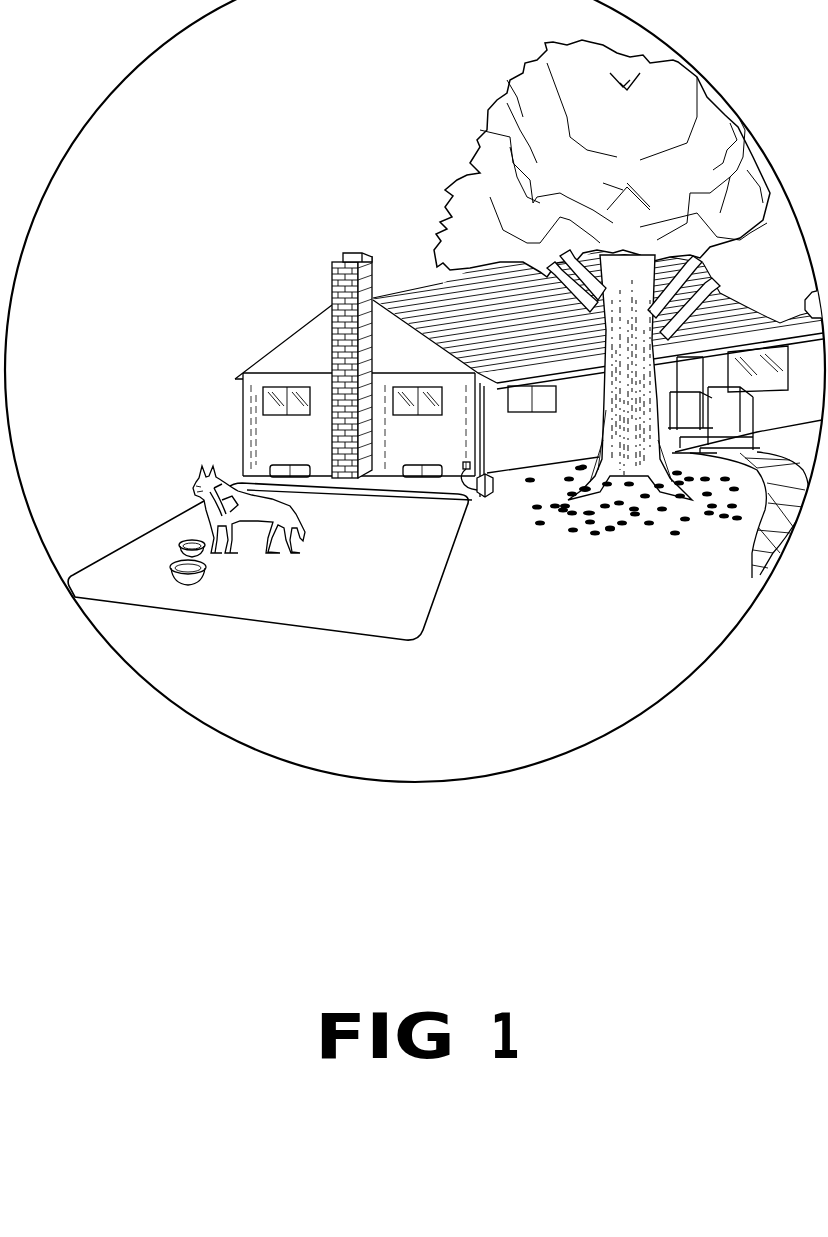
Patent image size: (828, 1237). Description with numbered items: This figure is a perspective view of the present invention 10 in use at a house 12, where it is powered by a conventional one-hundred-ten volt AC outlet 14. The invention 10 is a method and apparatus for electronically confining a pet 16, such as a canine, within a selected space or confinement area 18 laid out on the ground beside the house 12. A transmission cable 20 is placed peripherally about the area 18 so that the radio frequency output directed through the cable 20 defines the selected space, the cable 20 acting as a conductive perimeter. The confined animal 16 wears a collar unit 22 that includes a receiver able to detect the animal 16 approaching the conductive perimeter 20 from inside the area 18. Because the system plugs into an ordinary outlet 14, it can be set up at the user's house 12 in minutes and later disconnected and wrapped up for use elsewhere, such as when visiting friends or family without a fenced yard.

The present invention 10 is at (481, 593).
The house 12 is at (531, 379).
The 110 VAC outlet 14 is at (481, 494).
The pet 16 is at (180, 452).
The confinement area 18 is at (403, 595).
The transmission cable 20 is at (288, 625).
The collar unit 22 is at (213, 455).